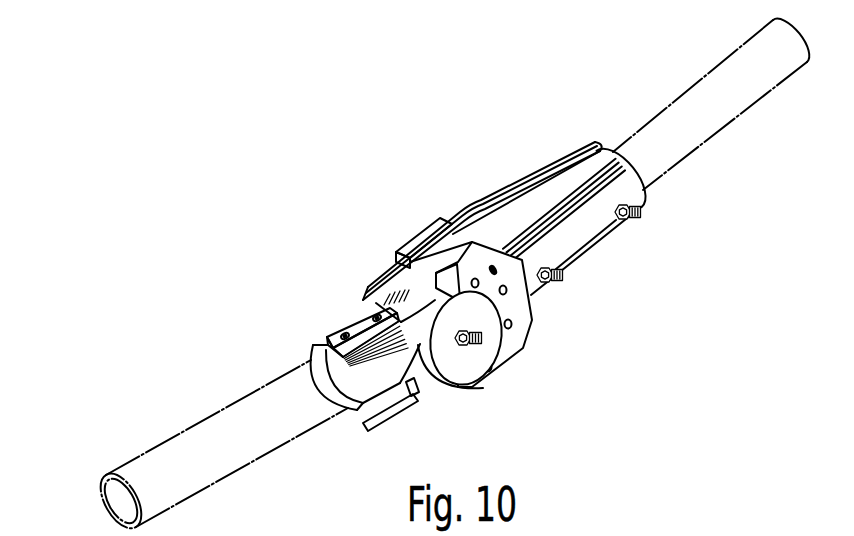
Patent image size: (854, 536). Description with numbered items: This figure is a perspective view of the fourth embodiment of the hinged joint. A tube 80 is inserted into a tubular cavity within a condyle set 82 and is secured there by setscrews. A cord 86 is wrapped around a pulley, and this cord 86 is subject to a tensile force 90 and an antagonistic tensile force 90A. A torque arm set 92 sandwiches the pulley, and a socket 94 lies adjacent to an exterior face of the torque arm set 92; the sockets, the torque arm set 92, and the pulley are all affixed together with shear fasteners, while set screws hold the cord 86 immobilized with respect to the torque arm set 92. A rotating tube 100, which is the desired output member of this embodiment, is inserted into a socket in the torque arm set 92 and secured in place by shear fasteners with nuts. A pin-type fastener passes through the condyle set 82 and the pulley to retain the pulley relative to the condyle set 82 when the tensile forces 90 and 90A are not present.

The tube 80 is at (208, 438).
The condyle set 82 is at (458, 382).
The cord 86 is at (373, 293).
The tensile force 90 is at (368, 296).
The antagonistic tensile force 90A is at (362, 427).
The torque arm set 92 is at (523, 205).
The socket 94 is at (510, 348).
The rotating tube 100 is at (685, 108).